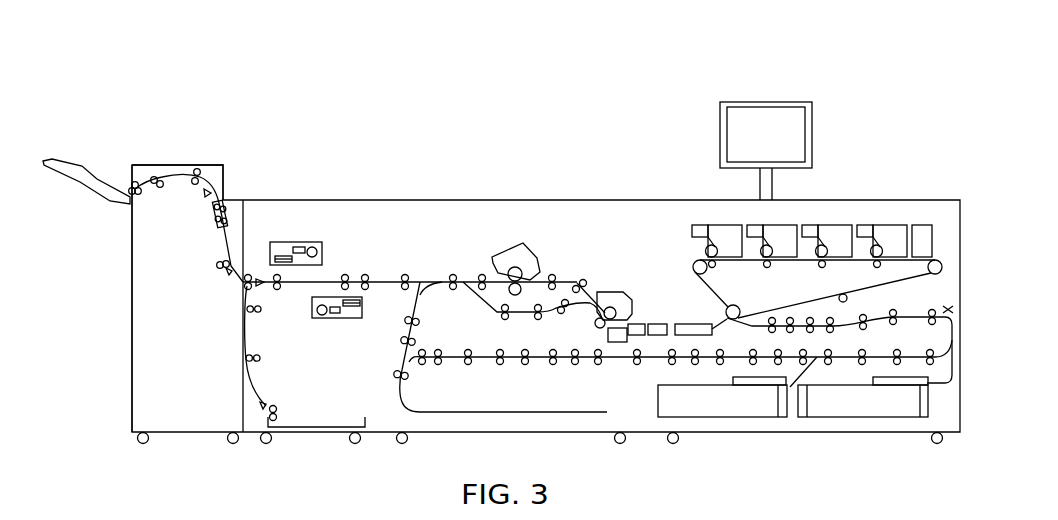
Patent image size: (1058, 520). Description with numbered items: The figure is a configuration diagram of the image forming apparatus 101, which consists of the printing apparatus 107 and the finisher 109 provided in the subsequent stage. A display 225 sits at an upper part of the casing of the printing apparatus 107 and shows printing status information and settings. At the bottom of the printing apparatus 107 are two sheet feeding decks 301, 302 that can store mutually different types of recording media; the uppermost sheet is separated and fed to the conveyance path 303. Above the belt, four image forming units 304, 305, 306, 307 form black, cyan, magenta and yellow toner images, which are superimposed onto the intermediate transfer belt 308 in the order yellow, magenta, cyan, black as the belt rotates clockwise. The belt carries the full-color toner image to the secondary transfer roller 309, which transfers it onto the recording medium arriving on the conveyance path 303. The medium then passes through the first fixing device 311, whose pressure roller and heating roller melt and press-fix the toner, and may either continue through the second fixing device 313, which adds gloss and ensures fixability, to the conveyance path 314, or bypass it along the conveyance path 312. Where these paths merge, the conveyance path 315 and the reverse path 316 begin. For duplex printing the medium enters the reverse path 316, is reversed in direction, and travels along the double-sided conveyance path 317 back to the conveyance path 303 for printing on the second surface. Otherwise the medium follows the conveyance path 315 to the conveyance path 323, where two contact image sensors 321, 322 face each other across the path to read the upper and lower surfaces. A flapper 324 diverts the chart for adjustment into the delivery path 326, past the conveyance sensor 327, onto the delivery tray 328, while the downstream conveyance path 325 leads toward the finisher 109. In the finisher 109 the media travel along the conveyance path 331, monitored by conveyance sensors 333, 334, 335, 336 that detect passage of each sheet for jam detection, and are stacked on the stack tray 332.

The image forming apparatus 101 is at (578, 87).
The printing apparatus 107 is at (583, 200).
The finisher 109 is at (203, 164).
The display 225 is at (812, 125).
The sheet feeding deck 301 is at (737, 418).
The sheet feeding deck 302 is at (873, 418).
The conveyance path 303 is at (913, 315).
The image forming unit 304 is at (895, 225).
The image forming unit 305 is at (840, 225).
The image forming unit 306 is at (785, 225).
The image forming unit 307 is at (720, 225).
The intermediate transfer belt 308 is at (825, 302).
The secondary transfer roller 309 is at (733, 306).
The first fixing device 311 is at (612, 290).
The conveyance path 312 is at (480, 293).
The second fixing device 313 is at (517, 250).
The conveyance path 314 is at (474, 279).
The conveyance path 315 is at (426, 278).
The reverse path 316 is at (417, 334).
The double-sided conveyance path 317 is at (618, 358).
The contact image sensor 321 is at (317, 244).
The contact image sensor 322 is at (343, 319).
The conveyance path 323 is at (353, 277).
The flapper 324 is at (262, 288).
The downstream conveyance path 325 is at (252, 270).
The delivery path 326 is at (258, 376).
The conveyance sensor 327 is at (270, 404).
The delivery tray 328 is at (338, 424).
The conveyance path 331 is at (178, 180).
The stack tray 332 is at (80, 167).
The conveyance sensor 333 is at (232, 278).
The conveyance sensor 334 is at (211, 224).
The conveyance sensor 335 is at (206, 193).
The conveyance sensor 336 is at (142, 185).